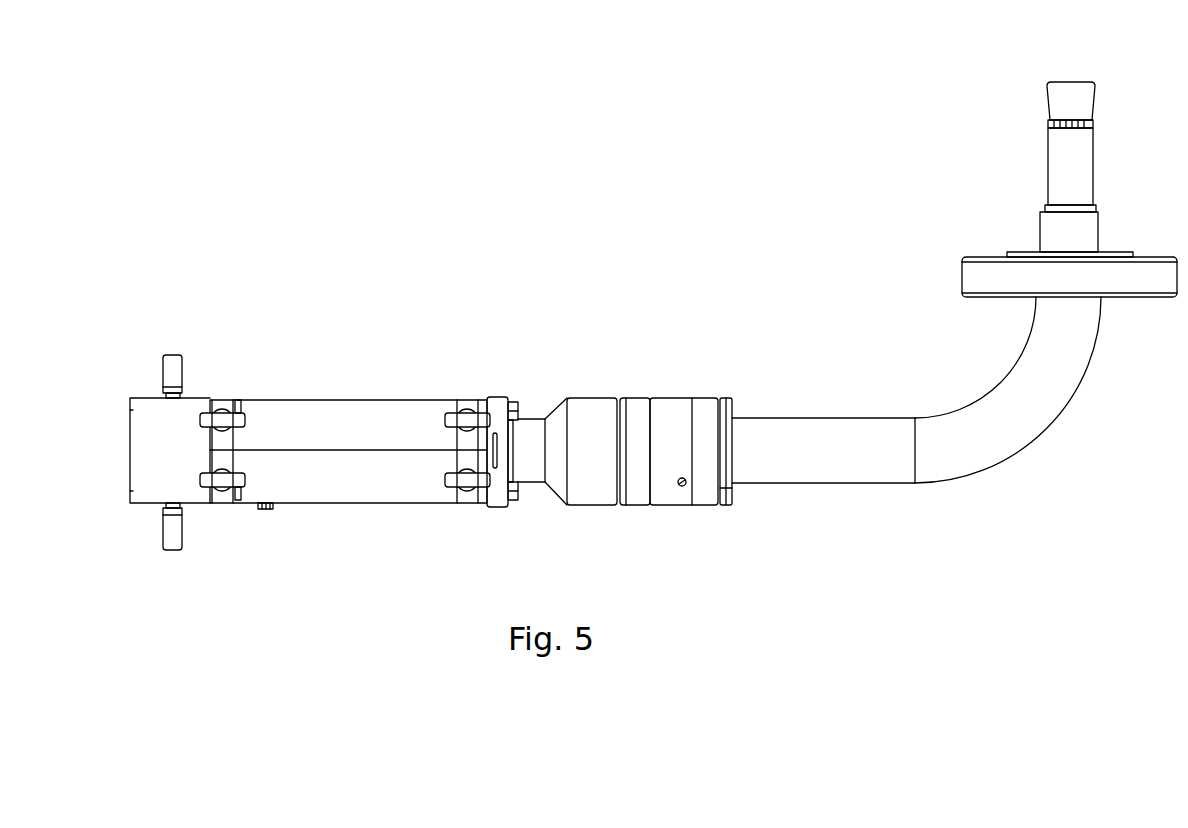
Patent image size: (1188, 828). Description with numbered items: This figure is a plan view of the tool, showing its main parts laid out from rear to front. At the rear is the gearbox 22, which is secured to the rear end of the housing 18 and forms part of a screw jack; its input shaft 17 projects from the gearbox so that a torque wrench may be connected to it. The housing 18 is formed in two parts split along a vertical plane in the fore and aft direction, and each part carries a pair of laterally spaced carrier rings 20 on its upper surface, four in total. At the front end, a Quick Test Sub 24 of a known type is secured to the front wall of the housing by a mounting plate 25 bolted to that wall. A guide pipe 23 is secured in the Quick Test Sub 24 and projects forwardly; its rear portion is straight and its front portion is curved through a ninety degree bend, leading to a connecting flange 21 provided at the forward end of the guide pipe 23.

The input shaft 17 is at (170, 543).
The housing 18 is at (318, 402).
The carrier rings 20 is at (460, 402).
The connecting flange 21 is at (975, 282).
The gearbox 22 is at (193, 408).
The guide pipe 23 is at (867, 483).
The Quick Test Sub 24 is at (650, 390).
The mounting plate 25 is at (500, 400).